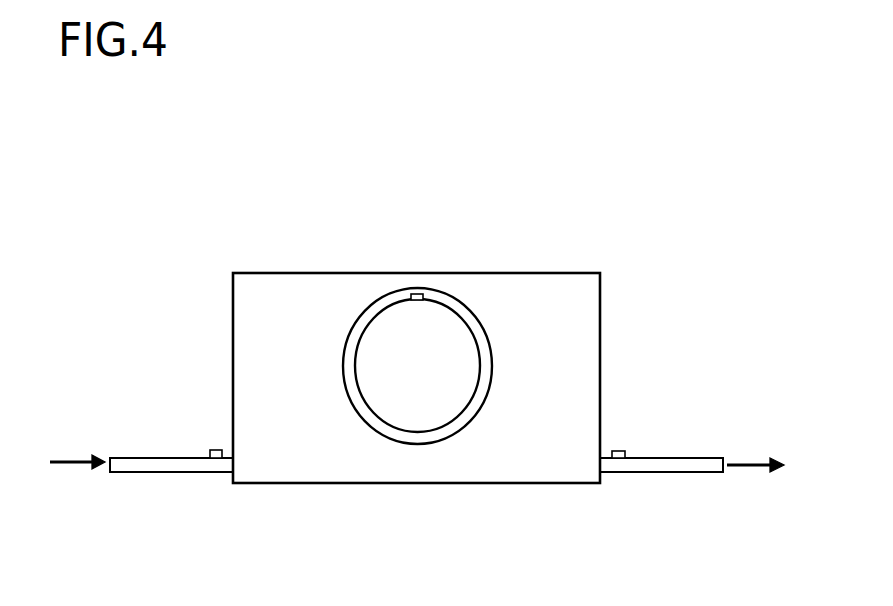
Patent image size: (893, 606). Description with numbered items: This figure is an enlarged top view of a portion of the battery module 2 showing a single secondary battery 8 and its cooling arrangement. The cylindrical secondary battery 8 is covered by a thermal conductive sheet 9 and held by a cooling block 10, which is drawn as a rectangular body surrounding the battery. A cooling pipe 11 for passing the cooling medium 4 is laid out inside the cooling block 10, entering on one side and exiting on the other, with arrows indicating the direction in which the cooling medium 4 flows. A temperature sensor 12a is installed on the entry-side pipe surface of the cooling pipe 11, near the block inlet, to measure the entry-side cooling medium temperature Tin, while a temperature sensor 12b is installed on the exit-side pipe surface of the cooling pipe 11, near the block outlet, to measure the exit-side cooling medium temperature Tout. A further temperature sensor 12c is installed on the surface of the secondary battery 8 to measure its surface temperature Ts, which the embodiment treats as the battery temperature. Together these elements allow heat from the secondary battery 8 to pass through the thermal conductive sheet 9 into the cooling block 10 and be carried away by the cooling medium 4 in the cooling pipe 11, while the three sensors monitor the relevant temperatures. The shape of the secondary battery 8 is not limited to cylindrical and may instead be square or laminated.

The battery module 2 is at (585, 198).
The cooling medium 4 is at (67, 460).
The secondary battery 8 is at (393, 315).
The thermal conductive sheet 9 is at (455, 305).
The cooling block 10 is at (590, 272).
The cooling pipe 11 is at (172, 472).
The temperature sensor 12a is at (215, 450).
The temperature sensor 12b is at (620, 451).
The temperature sensor 12c is at (417, 294).